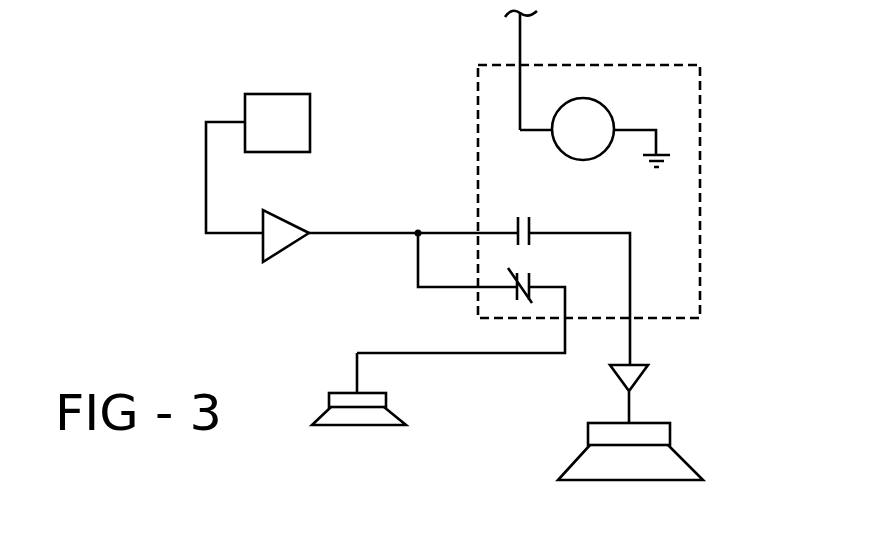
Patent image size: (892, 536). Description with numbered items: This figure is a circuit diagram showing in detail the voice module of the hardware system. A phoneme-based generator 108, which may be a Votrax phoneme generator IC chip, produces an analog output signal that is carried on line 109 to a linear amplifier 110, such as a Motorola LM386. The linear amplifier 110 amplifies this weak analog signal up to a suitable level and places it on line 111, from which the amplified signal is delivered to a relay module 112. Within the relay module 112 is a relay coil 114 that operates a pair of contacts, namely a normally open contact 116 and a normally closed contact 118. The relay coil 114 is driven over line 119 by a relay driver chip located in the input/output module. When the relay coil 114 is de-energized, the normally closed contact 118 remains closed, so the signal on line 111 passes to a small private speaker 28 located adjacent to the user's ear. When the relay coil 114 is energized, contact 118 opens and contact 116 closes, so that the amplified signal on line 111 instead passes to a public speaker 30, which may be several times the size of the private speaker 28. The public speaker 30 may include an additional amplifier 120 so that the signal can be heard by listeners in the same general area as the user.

The private speaker 28 is at (392, 417).
The public speaker 30 is at (680, 462).
The phoneme generator IC chip 108 is at (310, 130).
The line 109 is at (206, 147).
The linear amplifier 110 is at (285, 248).
The line 111 is at (358, 233).
The relay module 112 is at (700, 143).
The relay coil 114 is at (605, 120).
The normally open contact 116 is at (524, 217).
The normally closed contact 118 is at (508, 298).
The line 119 is at (520, 40).
The additional amplifier 120 is at (643, 367).